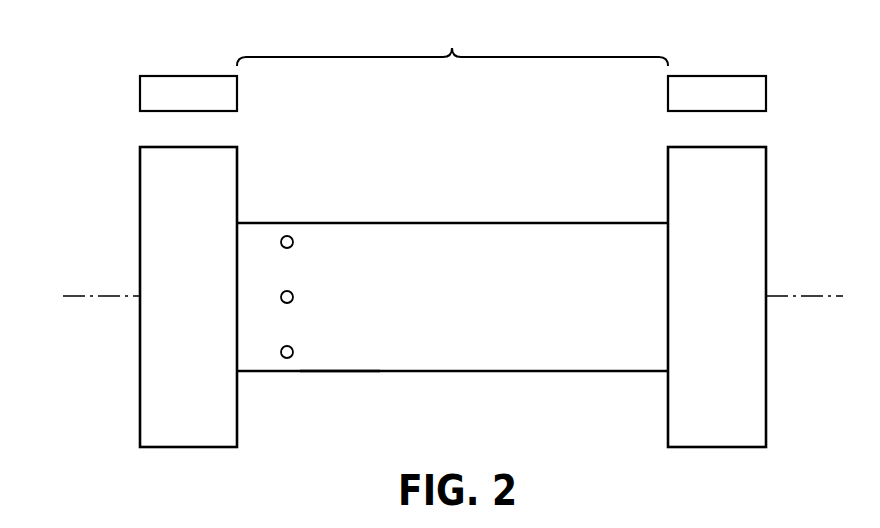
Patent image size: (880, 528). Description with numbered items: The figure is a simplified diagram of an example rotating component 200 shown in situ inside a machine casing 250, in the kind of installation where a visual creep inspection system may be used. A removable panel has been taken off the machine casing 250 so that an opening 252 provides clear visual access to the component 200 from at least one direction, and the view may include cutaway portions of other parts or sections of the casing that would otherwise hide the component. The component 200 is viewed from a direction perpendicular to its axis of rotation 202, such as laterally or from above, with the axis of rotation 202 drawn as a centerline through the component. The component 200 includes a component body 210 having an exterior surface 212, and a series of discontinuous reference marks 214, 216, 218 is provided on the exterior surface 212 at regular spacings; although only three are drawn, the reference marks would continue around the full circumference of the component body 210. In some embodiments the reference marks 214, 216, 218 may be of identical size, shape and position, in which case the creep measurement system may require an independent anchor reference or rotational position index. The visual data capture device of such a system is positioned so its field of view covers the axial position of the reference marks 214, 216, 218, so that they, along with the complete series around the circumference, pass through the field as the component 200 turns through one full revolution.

The component 200 is at (113, 200).
The axis of rotation 202 is at (80, 300).
The component body 210 is at (472, 372).
The exterior surface 212 is at (337, 360).
The reference mark 214 is at (293, 241).
The reference mark 216 is at (293, 296).
The reference mark 218 is at (292, 347).
The machine casing 250 is at (140, 96).
The opening 252 is at (452, 44).